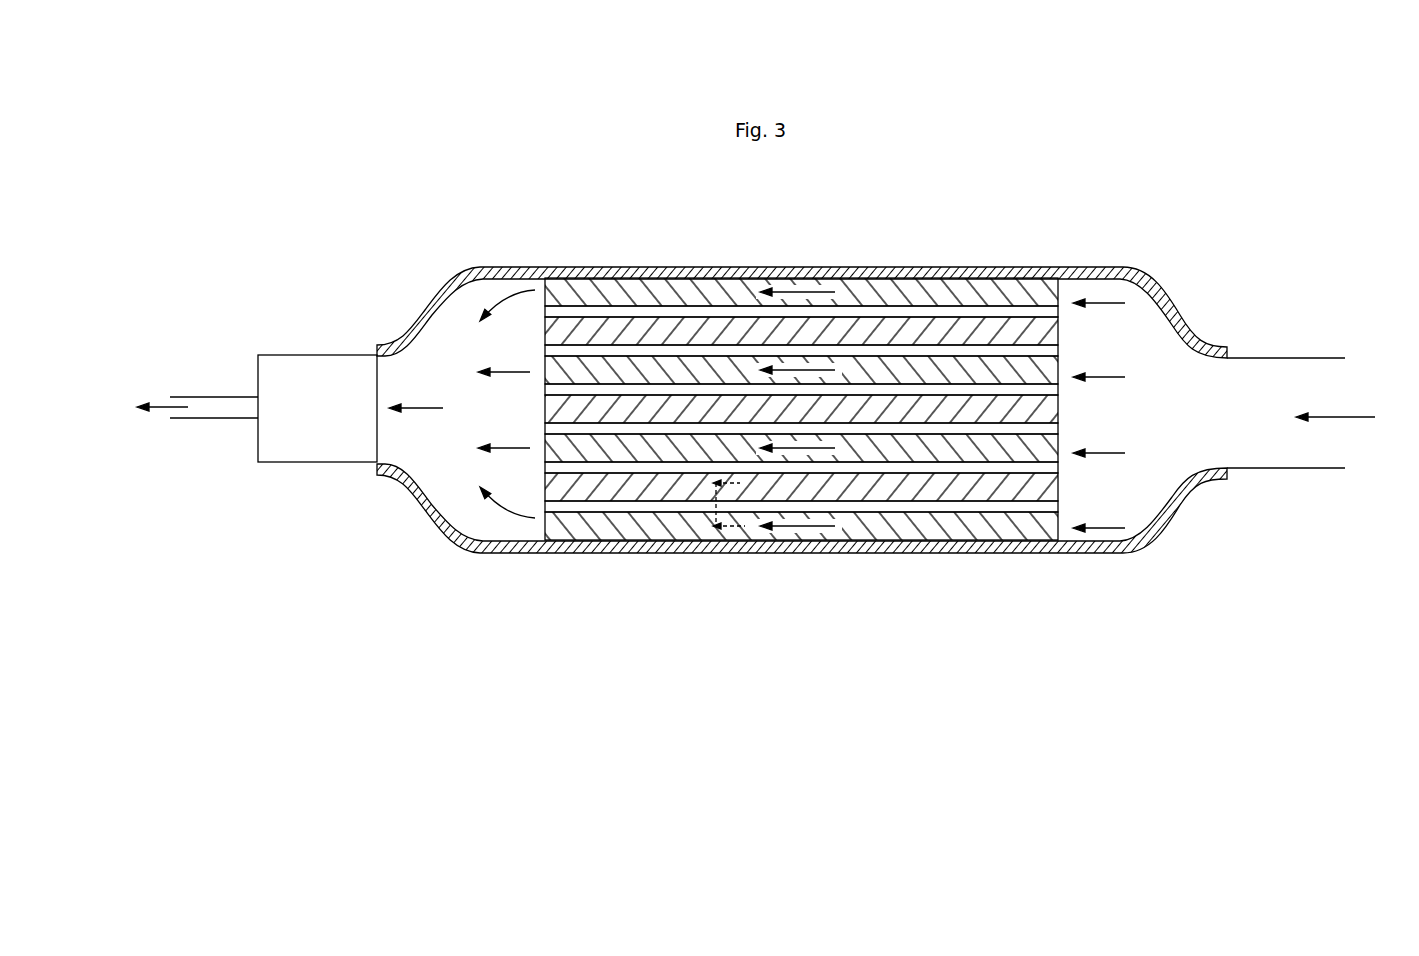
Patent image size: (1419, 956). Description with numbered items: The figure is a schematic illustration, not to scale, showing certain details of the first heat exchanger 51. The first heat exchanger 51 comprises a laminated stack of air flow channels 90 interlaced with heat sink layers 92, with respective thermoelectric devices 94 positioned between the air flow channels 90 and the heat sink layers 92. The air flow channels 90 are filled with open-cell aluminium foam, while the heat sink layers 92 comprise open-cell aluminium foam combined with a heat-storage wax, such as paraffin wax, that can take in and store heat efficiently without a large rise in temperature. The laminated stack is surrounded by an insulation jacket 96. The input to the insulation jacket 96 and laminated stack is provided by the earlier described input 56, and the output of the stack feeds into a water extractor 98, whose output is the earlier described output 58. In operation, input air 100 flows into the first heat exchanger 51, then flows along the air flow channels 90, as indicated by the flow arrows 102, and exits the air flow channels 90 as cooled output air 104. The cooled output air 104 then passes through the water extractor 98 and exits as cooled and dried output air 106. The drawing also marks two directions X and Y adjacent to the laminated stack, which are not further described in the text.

The first heat exchanger 51 is at (1078, 220).
The input 56 is at (1275, 358).
The output 58 is at (210, 395).
The air flow channels 90 is at (602, 363).
The heat sink layers 92 is at (693, 332).
The thermoelectric devices 94 is at (1000, 392).
The insulation jacket 96 is at (520, 268).
The water extractor 98 is at (310, 433).
The input air 100 is at (1117, 372).
The air flow along the air flow channels 102 is at (840, 372).
The cooled output air 104 is at (507, 368).
The cooled and dried output air 106 is at (158, 412).
The direction X is at (720, 486).
The direction Y is at (740, 542).